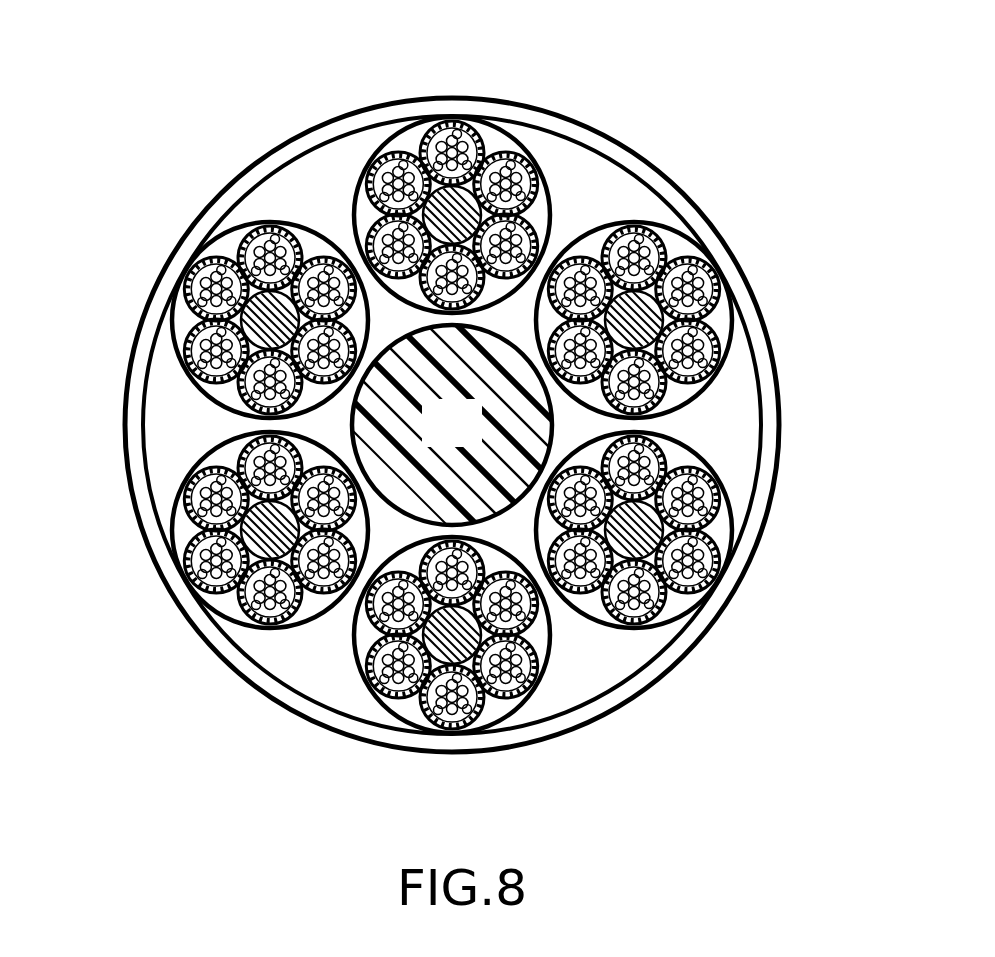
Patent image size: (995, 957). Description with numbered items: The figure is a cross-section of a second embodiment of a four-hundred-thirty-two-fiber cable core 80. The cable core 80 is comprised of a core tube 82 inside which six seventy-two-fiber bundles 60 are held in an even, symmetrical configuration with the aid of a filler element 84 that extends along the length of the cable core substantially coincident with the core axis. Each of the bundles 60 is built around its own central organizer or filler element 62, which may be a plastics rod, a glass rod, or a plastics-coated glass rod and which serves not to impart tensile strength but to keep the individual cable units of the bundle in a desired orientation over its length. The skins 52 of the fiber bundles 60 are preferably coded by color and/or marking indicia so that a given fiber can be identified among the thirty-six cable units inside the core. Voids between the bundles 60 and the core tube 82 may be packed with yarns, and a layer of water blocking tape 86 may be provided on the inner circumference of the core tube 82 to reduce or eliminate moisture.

The cable core 80 is at (646, 153).
The core tube 82 is at (684, 196).
The filler element 84 is at (476, 443).
The water blocking tape 86 is at (570, 702).
The 72-fiber bundle 60 is at (453, 419).
The filler element 62 is at (320, 262).
The skin 52 is at (593, 222).